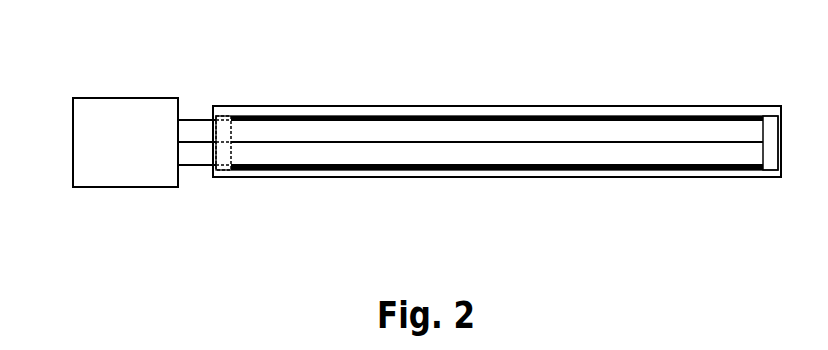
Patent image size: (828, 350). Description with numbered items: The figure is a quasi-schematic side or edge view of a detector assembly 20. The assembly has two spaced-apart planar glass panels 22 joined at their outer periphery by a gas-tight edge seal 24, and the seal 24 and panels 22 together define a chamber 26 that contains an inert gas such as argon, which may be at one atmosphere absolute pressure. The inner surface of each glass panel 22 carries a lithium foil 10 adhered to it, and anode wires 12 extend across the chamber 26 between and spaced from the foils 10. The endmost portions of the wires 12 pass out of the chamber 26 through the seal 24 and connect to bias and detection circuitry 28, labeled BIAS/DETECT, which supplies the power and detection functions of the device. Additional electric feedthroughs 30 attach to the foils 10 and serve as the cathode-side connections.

The lithium foil 10 is at (578, 116).
The anode wires 12 is at (197, 140).
The detector assembly 20 is at (596, 264).
The planar glass panels 22 is at (332, 107).
The gas-tight edge seal 24 is at (215, 156).
The chamber 26 is at (644, 122).
The bias and detection circuitry 28 is at (90, 107).
The electric feedthroughs 30 is at (205, 117).